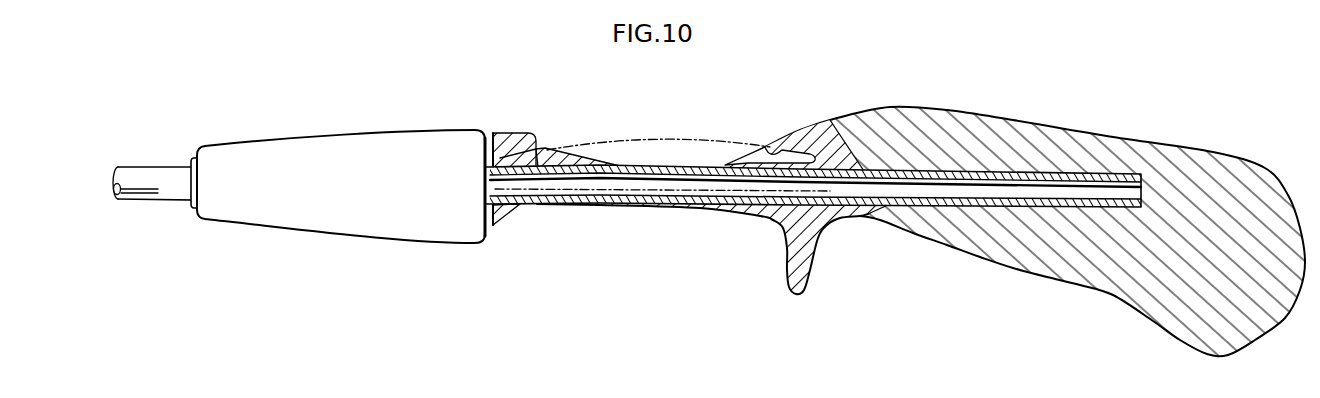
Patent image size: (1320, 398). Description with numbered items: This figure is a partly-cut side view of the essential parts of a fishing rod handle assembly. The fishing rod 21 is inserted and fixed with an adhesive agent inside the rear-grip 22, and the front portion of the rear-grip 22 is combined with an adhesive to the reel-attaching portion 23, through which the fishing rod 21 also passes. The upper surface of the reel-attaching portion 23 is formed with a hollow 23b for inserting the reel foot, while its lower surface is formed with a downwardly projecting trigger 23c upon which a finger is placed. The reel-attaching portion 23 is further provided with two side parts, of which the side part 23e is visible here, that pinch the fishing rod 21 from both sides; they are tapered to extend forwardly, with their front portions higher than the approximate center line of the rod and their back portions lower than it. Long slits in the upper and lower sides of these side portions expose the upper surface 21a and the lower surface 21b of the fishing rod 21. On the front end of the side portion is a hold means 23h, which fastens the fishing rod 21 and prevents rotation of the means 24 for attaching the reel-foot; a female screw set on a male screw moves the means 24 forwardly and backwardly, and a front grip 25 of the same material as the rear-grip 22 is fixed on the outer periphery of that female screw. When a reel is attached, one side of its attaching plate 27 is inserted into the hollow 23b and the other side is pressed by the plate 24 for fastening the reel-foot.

The fishing rod 21 is at (627, 159).
The upper surface of the fishing rod 21a is at (680, 168).
The lower surface of the fishing rod 21b is at (586, 205).
The rear-grip 22 is at (1045, 125).
The reel-attaching portion 23 is at (713, 187).
The hollow for inserting the reel foot 23b is at (796, 123).
The trigger 23c is at (808, 276).
The side part 23e is at (548, 160).
The hold means 23h is at (511, 212).
The means for attaching the reel-foot 24 is at (520, 173).
The handle 25 is at (345, 130).
The attaching plate 27 is at (625, 143).